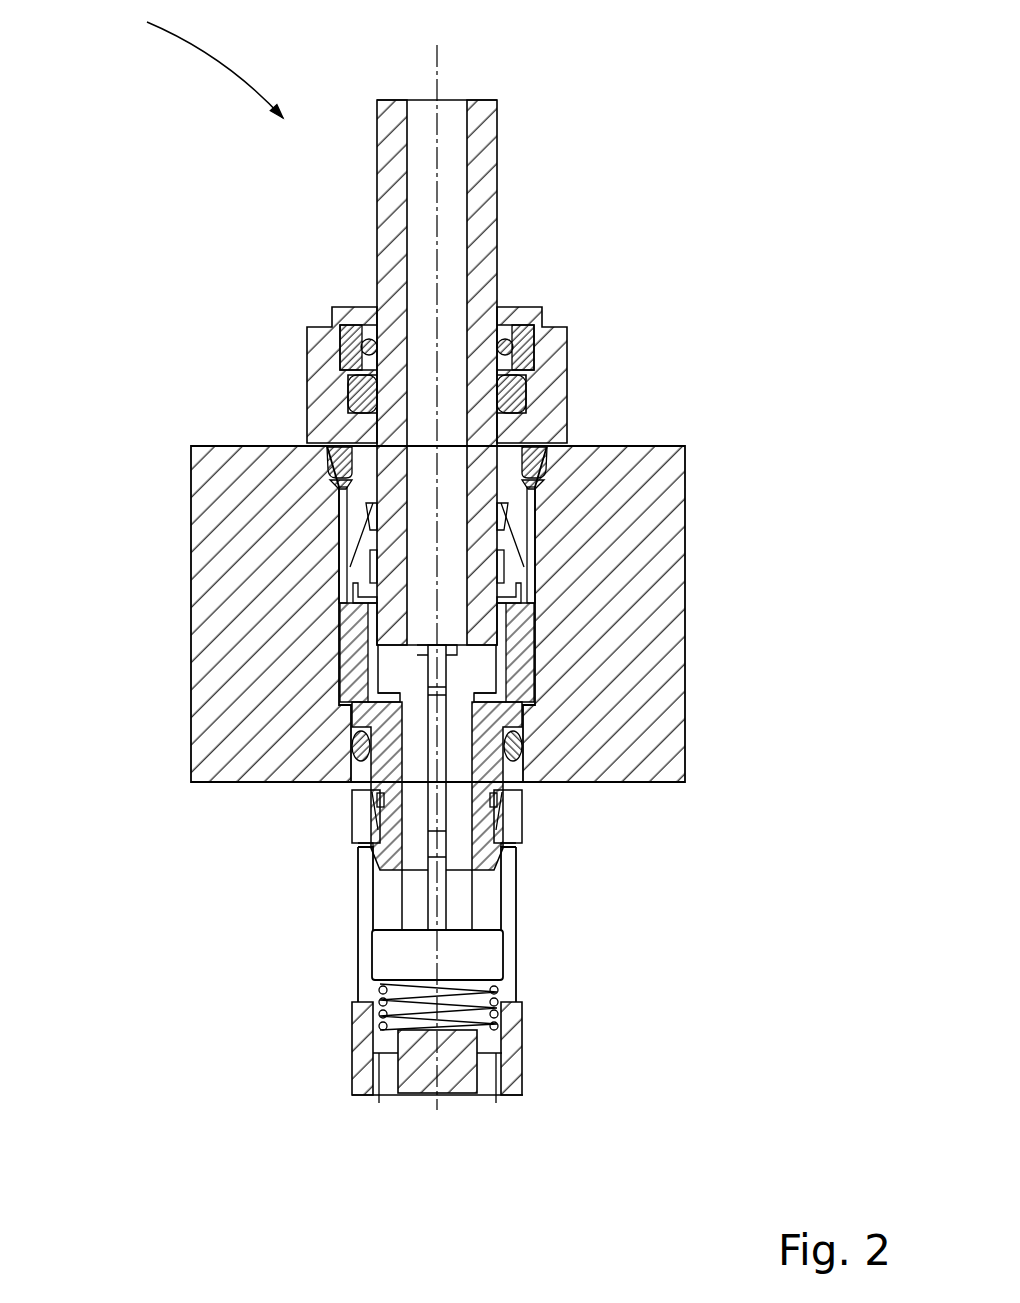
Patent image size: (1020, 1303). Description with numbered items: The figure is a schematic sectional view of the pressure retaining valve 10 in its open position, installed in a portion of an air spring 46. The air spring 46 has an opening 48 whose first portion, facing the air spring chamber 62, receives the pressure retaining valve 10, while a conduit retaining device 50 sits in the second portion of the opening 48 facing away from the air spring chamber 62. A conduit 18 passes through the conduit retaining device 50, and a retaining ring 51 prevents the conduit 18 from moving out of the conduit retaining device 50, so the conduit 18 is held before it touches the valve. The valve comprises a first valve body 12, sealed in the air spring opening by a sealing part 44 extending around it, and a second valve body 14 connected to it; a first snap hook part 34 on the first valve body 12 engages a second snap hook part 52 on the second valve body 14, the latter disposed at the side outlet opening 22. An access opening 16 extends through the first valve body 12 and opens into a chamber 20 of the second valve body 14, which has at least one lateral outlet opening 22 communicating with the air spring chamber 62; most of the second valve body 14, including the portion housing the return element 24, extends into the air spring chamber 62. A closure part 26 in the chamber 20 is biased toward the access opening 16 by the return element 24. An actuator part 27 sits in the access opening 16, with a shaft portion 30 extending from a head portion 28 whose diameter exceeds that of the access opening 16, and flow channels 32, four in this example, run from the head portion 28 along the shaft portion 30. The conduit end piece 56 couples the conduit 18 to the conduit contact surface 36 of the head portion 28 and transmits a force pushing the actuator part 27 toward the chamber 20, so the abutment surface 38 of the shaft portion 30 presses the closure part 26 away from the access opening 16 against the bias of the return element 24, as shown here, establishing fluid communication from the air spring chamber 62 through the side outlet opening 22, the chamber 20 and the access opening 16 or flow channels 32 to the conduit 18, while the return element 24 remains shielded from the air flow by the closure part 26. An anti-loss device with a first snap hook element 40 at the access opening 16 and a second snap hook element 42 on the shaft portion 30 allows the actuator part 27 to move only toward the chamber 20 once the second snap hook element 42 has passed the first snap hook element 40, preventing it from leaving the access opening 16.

The pressure retaining valve 10 is at (186, 59).
The first valve body 12 is at (516, 614).
The second valve body 14 is at (610, 1086).
The access opening 16 is at (657, 786).
The conduit 18 is at (609, 372).
The chamber 20 is at (600, 924).
The lateral outlet opening 22 is at (610, 1004).
The return element 24 is at (290, 1048).
The closure part 26 is at (280, 976).
The actuator part 27 is at (265, 917).
The head portion 28 is at (277, 630).
The shaft portion 30 is at (257, 777).
The flow channel 32 is at (591, 622).
The first snap hook part 34 is at (287, 875).
The conduit contact surface 36 is at (590, 538).
The abutment surface 38 is at (622, 937).
The first snap hook element 40 is at (230, 776).
The second snap hook element 42 is at (277, 820).
The sealing part 44 is at (597, 721).
The air spring 46 is at (584, 413).
The opening 48 is at (669, 504).
The conduit retaining device 50 is at (574, 355).
The retaining ring 51 is at (225, 526).
The second snap hook part 52 is at (290, 792).
The conduit end piece 56 is at (291, 543).
The air spring chamber 62 is at (721, 775).